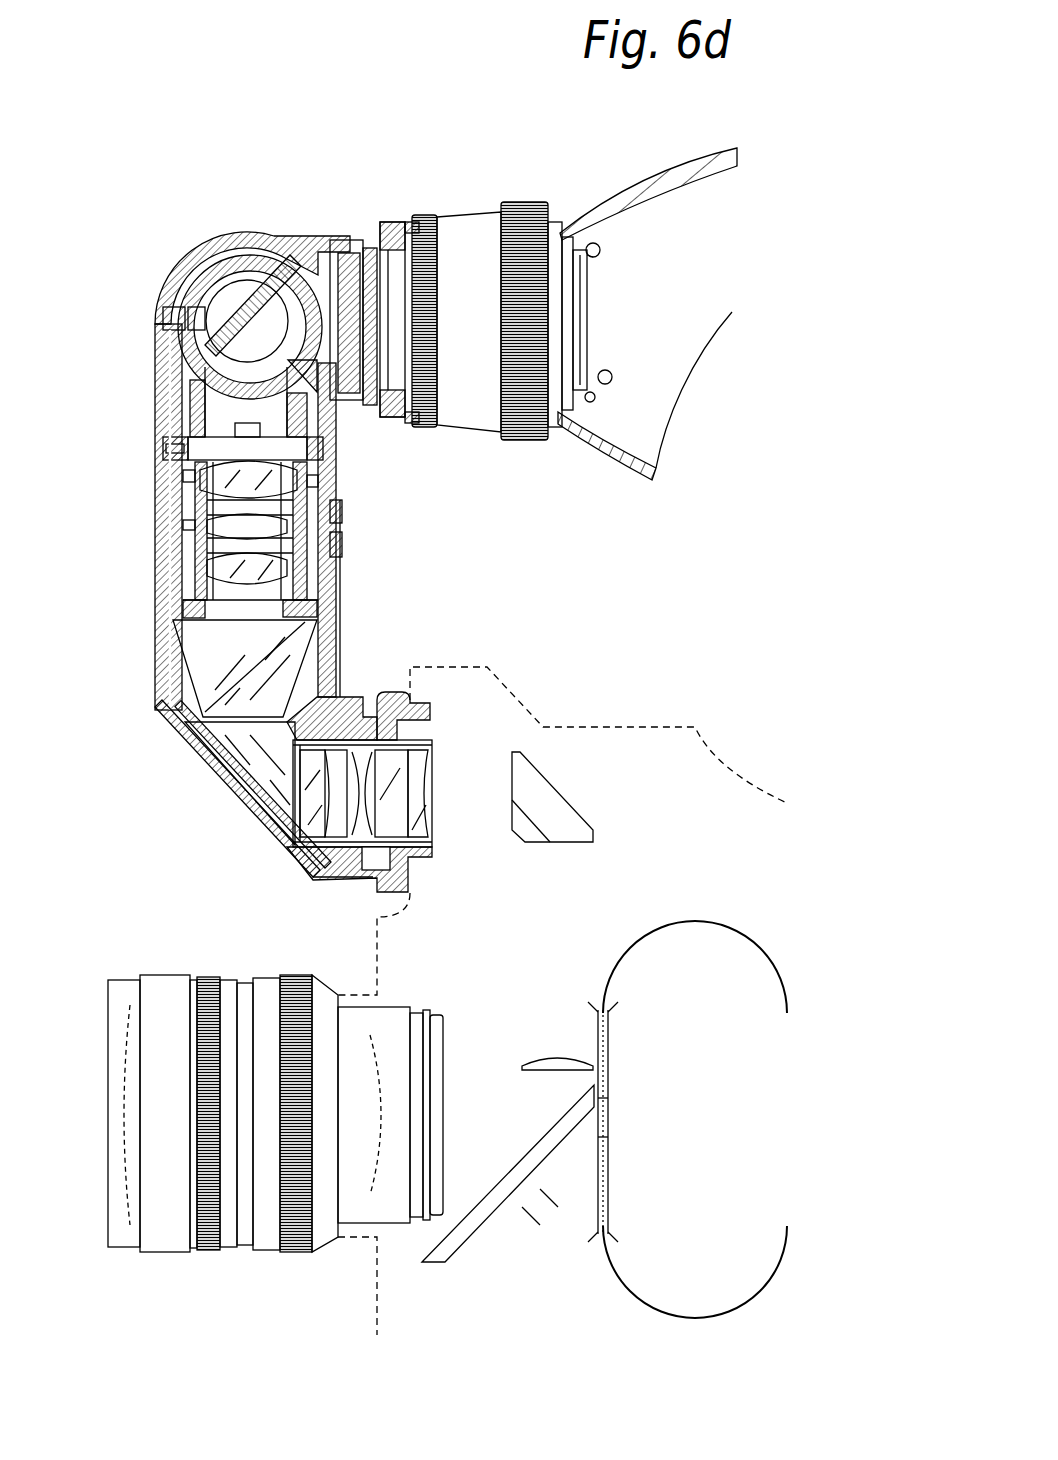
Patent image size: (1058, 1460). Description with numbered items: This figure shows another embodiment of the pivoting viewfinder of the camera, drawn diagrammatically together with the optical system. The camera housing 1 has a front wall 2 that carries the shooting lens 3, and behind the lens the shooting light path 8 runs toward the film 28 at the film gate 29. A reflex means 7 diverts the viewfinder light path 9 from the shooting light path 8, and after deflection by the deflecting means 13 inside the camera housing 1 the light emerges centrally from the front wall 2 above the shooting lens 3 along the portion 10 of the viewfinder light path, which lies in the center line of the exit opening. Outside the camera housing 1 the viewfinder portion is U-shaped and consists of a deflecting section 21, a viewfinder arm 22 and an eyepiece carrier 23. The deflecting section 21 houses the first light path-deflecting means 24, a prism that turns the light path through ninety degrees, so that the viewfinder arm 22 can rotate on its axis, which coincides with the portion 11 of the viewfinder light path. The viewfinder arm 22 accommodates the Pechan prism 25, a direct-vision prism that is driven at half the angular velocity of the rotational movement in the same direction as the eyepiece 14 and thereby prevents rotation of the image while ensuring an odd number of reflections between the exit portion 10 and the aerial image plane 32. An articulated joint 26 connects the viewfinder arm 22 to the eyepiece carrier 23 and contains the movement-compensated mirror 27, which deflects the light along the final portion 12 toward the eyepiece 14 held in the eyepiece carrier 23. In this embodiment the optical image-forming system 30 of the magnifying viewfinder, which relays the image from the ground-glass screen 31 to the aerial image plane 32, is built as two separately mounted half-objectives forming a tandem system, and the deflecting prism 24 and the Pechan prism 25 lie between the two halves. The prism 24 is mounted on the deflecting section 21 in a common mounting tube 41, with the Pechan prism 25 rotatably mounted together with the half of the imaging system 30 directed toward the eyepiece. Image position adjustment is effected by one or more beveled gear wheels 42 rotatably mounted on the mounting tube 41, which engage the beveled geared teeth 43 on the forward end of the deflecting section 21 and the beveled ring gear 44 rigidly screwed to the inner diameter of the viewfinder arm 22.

The camera housing 1 is at (598, 475).
The front wall 2 is at (340, 1007).
The shooting lens 3 is at (245, 1240).
The reflex means 7 is at (436, 1265).
The shooting light path 8 is at (187, 1113).
The viewfinder light path 9 is at (556, 1110).
The viewfinder light path portion 10 is at (386, 816).
The viewfinder light path portion 11 is at (240, 406).
The viewfinder light path portion 12 is at (348, 261).
The deflecting means 13 is at (586, 794).
The eyepiece 14 is at (512, 279).
The deflecting section 21 is at (155, 702).
The viewfinder arm 22 is at (338, 606).
The eyepiece carrier 23 is at (269, 237).
The first viewfinder light path-deflecting means 24 is at (277, 812).
The Pechan prism 25 is at (190, 628).
The articulated joint 26 is at (252, 255).
The movement-compensated mirror 27 is at (163, 327).
The film 28 is at (620, 1284).
The film gate 29 is at (695, 1025).
The optical image-forming system 30 is at (371, 716).
The ground-glass screen 31 is at (544, 1058).
The aerial image plane 32 is at (420, 360).
The mechanical mounting tube 41 is at (333, 555).
The beveled geared wheels 42 is at (195, 493).
The beveled geared teeth 43 is at (330, 500).
The beveled ring gear 44 is at (163, 459).